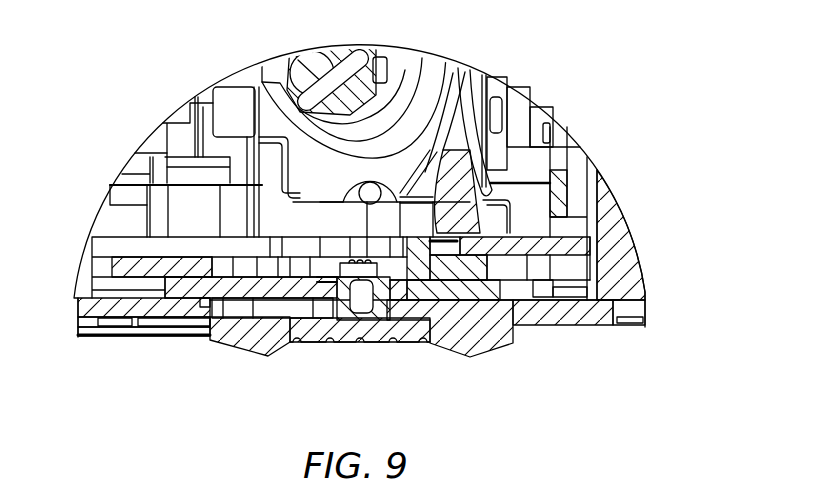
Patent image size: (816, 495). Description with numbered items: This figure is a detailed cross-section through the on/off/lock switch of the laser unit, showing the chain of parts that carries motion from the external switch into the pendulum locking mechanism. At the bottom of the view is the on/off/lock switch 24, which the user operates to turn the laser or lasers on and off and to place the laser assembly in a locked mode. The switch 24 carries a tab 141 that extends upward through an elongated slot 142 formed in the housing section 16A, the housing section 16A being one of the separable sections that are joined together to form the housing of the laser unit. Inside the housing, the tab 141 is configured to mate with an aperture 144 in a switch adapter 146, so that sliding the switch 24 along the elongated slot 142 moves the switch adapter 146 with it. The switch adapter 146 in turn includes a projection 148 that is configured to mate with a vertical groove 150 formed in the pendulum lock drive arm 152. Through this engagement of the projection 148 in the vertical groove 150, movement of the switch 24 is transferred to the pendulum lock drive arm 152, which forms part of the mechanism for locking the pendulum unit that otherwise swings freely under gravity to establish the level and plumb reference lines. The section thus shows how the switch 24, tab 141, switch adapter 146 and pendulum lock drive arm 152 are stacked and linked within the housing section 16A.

The housing section 16A is at (155, 312).
The on/off/lock switch 24 is at (488, 340).
The tab 141 is at (380, 302).
The elongated slot 142 is at (267, 312).
The aperture 144 is at (315, 307).
The switch adapter 146 is at (523, 293).
The projection 148 is at (440, 260).
The vertical groove 150 is at (443, 230).
The pendulum lock drive arm 152 is at (578, 248).